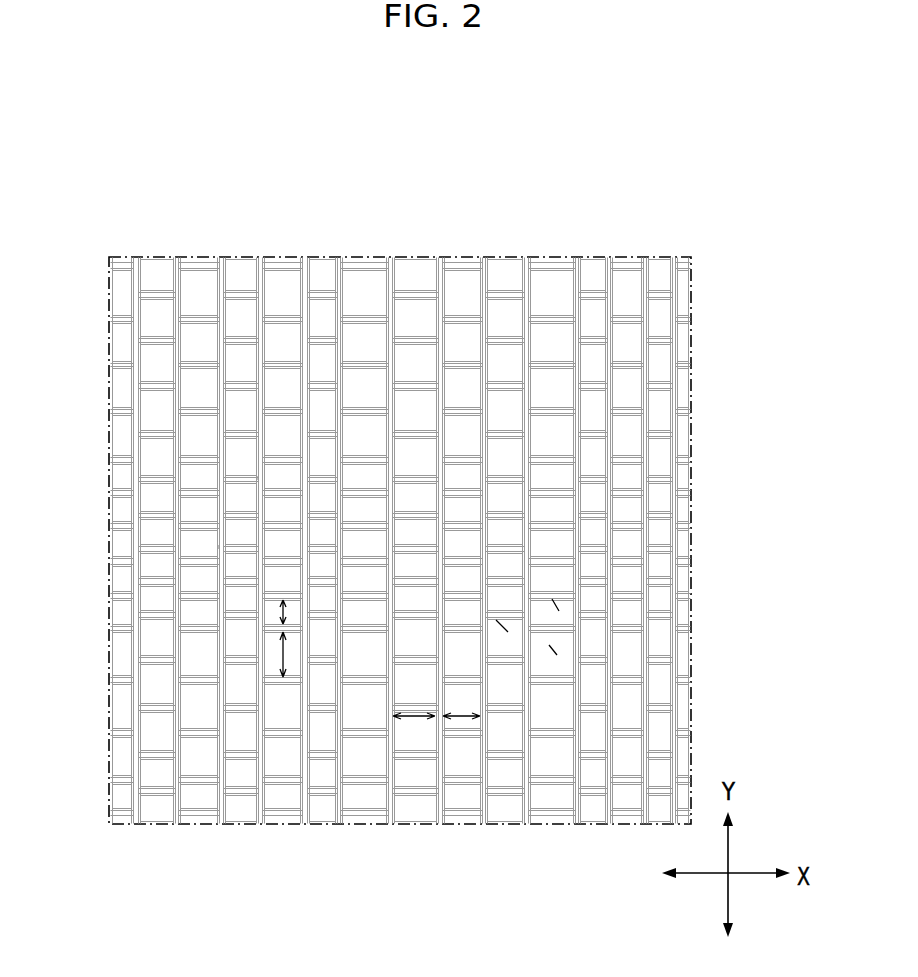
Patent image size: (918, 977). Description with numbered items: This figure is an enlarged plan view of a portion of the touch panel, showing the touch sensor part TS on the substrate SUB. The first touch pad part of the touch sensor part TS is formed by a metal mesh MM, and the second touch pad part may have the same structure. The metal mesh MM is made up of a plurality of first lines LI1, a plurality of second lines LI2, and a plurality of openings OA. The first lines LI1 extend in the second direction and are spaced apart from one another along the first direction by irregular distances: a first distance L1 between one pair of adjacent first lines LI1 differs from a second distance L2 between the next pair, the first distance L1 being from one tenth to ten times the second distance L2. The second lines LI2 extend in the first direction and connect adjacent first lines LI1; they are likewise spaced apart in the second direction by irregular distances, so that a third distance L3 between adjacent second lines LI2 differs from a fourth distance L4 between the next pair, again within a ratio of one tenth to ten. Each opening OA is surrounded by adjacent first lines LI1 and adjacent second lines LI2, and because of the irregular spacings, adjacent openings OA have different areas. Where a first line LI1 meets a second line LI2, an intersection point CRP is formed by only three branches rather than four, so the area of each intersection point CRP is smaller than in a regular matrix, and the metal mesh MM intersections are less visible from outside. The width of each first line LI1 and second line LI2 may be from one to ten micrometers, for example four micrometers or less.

The touch sensor part TS is at (425, 145).
The substrate SUB is at (660, 305).
The metal mesh MM is at (401, 541).
The first line LI1 is at (611, 396).
The second line LI2 is at (588, 436).
The intersection point CRP is at (262, 546).
The opening OA is at (553, 651).
The first distance L1 is at (415, 718).
The second distance L2 is at (460, 718).
The third distance L3 is at (278, 613).
The fourth distance L4 is at (278, 660).